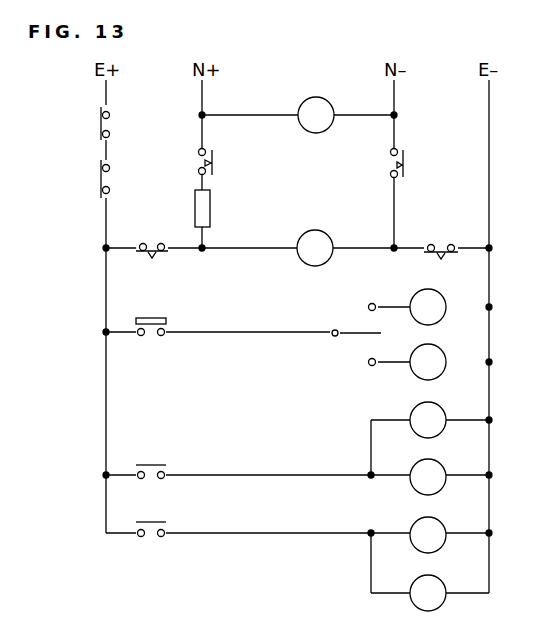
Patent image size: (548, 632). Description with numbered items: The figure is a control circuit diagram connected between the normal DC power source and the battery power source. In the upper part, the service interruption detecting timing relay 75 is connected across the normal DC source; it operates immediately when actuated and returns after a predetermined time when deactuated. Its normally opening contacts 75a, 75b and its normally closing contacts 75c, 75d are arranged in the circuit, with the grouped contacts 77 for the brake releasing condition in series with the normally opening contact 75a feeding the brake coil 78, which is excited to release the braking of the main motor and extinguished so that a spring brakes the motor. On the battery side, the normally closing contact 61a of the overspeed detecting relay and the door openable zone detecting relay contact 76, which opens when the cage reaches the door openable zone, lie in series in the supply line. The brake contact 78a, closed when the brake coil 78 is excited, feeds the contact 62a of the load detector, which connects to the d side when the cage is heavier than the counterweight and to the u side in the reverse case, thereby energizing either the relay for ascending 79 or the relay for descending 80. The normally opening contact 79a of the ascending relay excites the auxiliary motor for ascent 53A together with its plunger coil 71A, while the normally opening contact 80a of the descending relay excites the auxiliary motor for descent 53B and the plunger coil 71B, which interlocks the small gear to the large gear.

The normally closing contact of the overspeed detecting relay 61a is at (101, 126).
The door openable zone detecting relay contact 76 is at (101, 179).
The service interruption detecting timing relay 75 is at (320, 98).
The normally opening contact 75a is at (212, 163).
The normally opening contact 75b is at (403, 165).
The grouped contacts for the brake releasing condition 77 is at (213, 214).
The brake coil 78 is at (314, 225).
The normally closing contact 75c is at (148, 244).
The normally closing contact 75d is at (440, 246).
The brake contact 78a is at (155, 316).
The contact of the load detector 62a is at (354, 333).
The relay for ascending 79 is at (442, 295).
The relay for descending 80 is at (441, 350).
The plunger coil 71A is at (452, 402).
The auxiliary motor for ascent 53A is at (450, 460).
The auxiliary motor for descent 53B is at (450, 520).
The plunger coil 71B is at (452, 576).
The normally opening contact 79a is at (150, 463).
The normally opening contact 80a is at (150, 520).